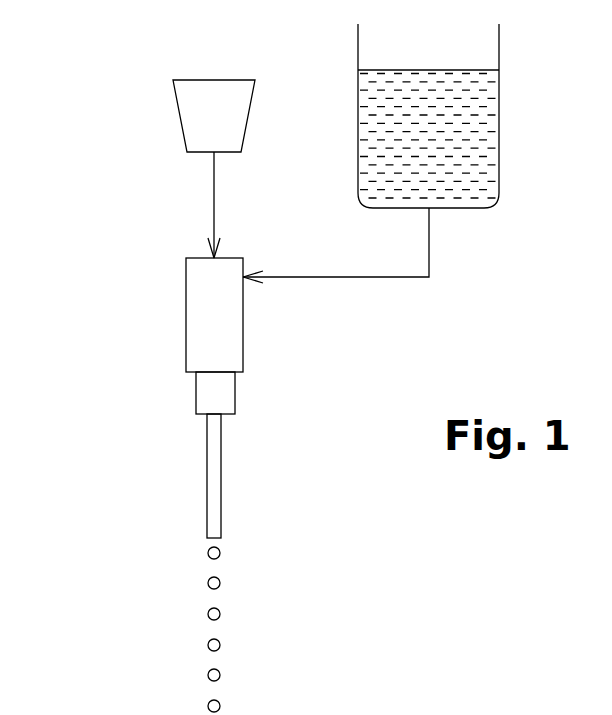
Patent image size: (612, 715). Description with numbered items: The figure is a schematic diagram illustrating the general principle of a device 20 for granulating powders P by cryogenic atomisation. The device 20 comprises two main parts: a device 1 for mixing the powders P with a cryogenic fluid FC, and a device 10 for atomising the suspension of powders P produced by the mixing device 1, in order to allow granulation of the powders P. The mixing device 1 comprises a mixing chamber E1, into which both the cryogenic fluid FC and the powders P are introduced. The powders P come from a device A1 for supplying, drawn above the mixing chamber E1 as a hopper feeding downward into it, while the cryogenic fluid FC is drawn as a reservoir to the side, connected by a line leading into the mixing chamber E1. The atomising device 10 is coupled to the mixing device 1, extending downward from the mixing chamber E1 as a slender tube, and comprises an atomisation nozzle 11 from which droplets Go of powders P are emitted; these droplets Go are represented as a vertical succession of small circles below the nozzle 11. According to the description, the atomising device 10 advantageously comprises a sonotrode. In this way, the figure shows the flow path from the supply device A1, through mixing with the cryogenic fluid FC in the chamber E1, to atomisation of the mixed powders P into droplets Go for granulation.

The device for granulating powders 20 is at (93, 213).
The device for mixing powders 1 is at (228, 398).
The powders P is at (221, 92).
The device for supplying A1 is at (182, 83).
The mixing chamber E1 is at (198, 313).
The device for atomising 10 is at (216, 476).
The atomisation nozzle 11 is at (214, 518).
The cryogenic fluid FC is at (480, 132).
The droplets Go is at (208, 583).